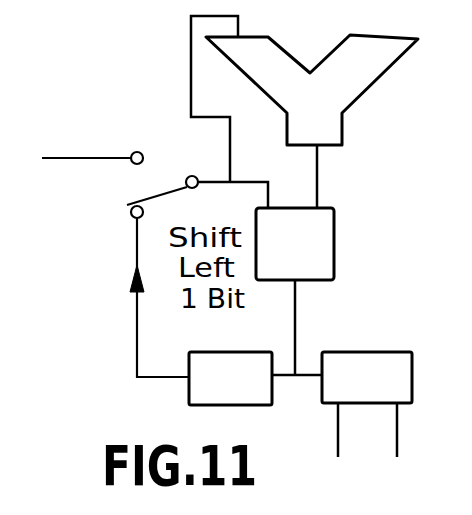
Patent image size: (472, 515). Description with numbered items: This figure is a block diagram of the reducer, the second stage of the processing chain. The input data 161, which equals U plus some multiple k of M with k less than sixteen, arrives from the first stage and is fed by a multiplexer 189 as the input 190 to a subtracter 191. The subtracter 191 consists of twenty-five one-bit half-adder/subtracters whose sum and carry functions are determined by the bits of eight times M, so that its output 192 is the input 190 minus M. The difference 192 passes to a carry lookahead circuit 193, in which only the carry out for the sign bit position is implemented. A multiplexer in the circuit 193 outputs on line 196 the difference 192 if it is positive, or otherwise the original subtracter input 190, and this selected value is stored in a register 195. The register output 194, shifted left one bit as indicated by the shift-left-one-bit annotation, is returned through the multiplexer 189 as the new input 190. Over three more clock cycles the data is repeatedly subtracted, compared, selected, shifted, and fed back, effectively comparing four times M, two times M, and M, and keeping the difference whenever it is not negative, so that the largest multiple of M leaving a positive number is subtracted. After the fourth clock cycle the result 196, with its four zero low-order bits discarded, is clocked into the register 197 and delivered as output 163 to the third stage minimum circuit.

The input data 161 is at (86, 140).
The multiplexer 189 is at (157, 168).
The input to subtracter 190 is at (238, 112).
The subtracter 191 is at (312, 90).
The subtracter output 192 is at (344, 177).
The carry lookahead circuit with multiplexer 193 is at (295, 244).
The register output 194 is at (158, 314).
The register 195 is at (230, 378).
The multiplexer output 196 is at (321, 327).
The register 197 is at (342, 377).
The output to third stage 163 is at (367, 447).